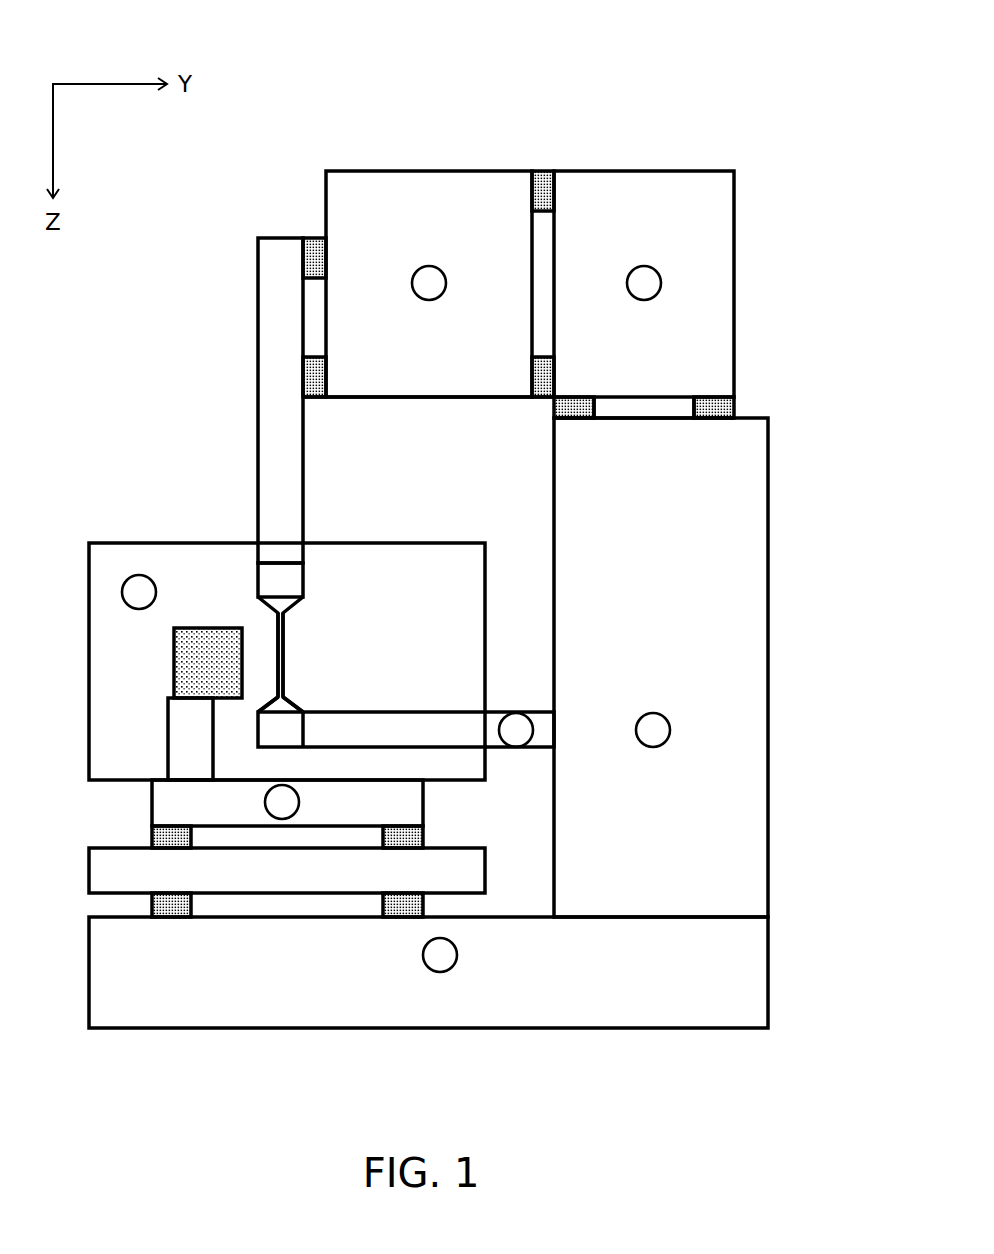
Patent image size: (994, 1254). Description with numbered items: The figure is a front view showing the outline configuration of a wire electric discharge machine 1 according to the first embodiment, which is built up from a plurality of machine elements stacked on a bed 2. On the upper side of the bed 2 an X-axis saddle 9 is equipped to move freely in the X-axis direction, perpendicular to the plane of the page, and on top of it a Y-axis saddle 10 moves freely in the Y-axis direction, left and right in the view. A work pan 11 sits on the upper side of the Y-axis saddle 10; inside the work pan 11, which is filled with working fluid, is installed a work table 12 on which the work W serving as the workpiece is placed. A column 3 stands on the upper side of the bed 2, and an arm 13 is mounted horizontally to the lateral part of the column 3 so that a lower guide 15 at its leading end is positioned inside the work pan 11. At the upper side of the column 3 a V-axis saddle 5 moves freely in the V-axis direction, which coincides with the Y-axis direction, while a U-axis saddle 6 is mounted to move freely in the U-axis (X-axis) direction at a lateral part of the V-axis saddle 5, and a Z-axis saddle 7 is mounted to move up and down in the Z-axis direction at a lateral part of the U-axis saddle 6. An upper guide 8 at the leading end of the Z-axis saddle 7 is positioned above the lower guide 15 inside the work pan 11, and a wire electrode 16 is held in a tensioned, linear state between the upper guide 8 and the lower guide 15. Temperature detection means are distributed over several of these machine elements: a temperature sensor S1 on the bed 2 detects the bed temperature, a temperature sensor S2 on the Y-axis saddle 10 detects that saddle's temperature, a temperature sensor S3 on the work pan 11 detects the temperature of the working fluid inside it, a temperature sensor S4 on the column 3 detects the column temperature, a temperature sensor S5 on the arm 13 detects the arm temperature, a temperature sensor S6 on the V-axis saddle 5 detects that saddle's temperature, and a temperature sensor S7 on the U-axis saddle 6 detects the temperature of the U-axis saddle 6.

The wire electric discharge machine 1 is at (679, 90).
The bed 2 is at (280, 1015).
The column 3 is at (757, 607).
The V-axis saddle 5 is at (724, 207).
The U-axis saddle 6 is at (356, 173).
The Z-axis saddle 7 is at (268, 353).
The upper guide 8 is at (262, 582).
The X-axis saddle 9 is at (97, 873).
The Y-axis saddle 10 is at (160, 802).
The work pan 11 is at (482, 577).
The work table 12 is at (183, 728).
The arm 13 is at (430, 718).
The lower guide 15 is at (291, 710).
The wire electrode 16 is at (280, 630).
The work W is at (183, 662).
The temperature sensor S1 is at (440, 960).
The temperature sensor S2 is at (290, 802).
The temperature sensor S3 is at (133, 585).
The temperature sensor S4 is at (662, 730).
The temperature sensor S5 is at (516, 718).
The temperature sensor S6 is at (651, 283).
The temperature sensor S7 is at (429, 270).